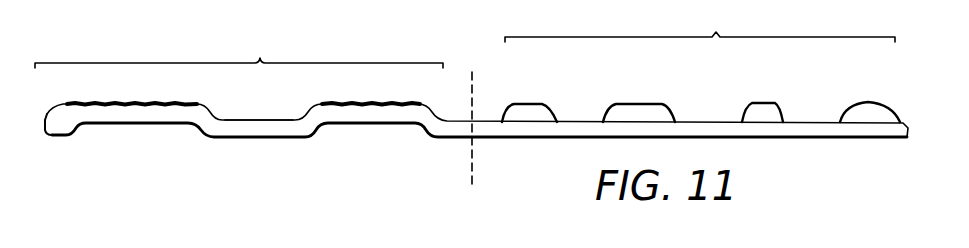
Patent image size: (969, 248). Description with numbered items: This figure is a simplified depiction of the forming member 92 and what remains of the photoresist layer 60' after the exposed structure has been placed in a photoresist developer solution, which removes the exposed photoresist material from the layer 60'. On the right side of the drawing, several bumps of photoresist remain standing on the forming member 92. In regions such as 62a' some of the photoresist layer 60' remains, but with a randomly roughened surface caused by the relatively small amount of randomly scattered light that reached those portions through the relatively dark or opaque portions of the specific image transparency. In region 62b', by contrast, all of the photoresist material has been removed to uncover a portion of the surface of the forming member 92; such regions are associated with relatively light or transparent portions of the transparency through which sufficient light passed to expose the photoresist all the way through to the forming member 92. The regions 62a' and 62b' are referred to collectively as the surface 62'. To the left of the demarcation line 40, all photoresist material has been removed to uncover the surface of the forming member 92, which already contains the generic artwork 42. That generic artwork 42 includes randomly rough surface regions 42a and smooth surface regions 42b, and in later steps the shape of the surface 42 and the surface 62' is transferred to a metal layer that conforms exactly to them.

The generic artwork 42 is at (239, 48).
The surface region of generic artwork 42a is at (137, 101).
The surface region of generic artwork 42b is at (42, 121).
The forming member 92 is at (129, 124).
The demarcation line 40 is at (475, 84).
The surface 62' is at (700, 23).
The region of remaining photoresist 62a' is at (588, 96).
The region of removed photoresist 62b' is at (770, 87).
The photoresist layer 60' is at (870, 94).